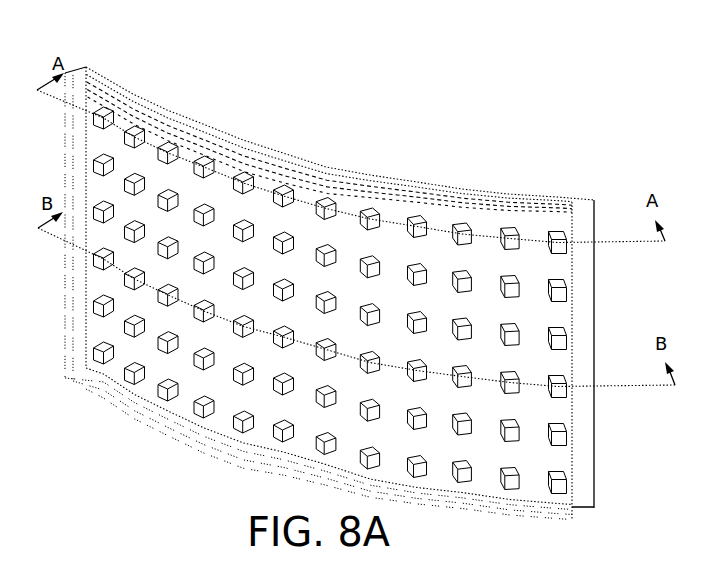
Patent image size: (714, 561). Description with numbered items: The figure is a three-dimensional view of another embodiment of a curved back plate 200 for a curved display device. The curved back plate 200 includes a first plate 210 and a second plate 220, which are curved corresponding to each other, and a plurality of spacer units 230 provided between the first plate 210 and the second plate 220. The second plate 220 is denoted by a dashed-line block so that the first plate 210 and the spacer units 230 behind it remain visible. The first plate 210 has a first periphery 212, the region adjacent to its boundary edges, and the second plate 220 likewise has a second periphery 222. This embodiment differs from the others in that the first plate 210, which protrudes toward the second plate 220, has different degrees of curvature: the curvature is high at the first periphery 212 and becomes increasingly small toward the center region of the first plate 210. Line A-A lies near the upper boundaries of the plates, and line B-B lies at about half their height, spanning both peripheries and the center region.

The curved back plate 200 is at (326, 270).
The first plate 210 is at (87, 67).
The first periphery 212 is at (307, 157).
The second plate 220 is at (65, 71).
The second periphery 222 is at (270, 143).
The spacer units 230 is at (134, 127).